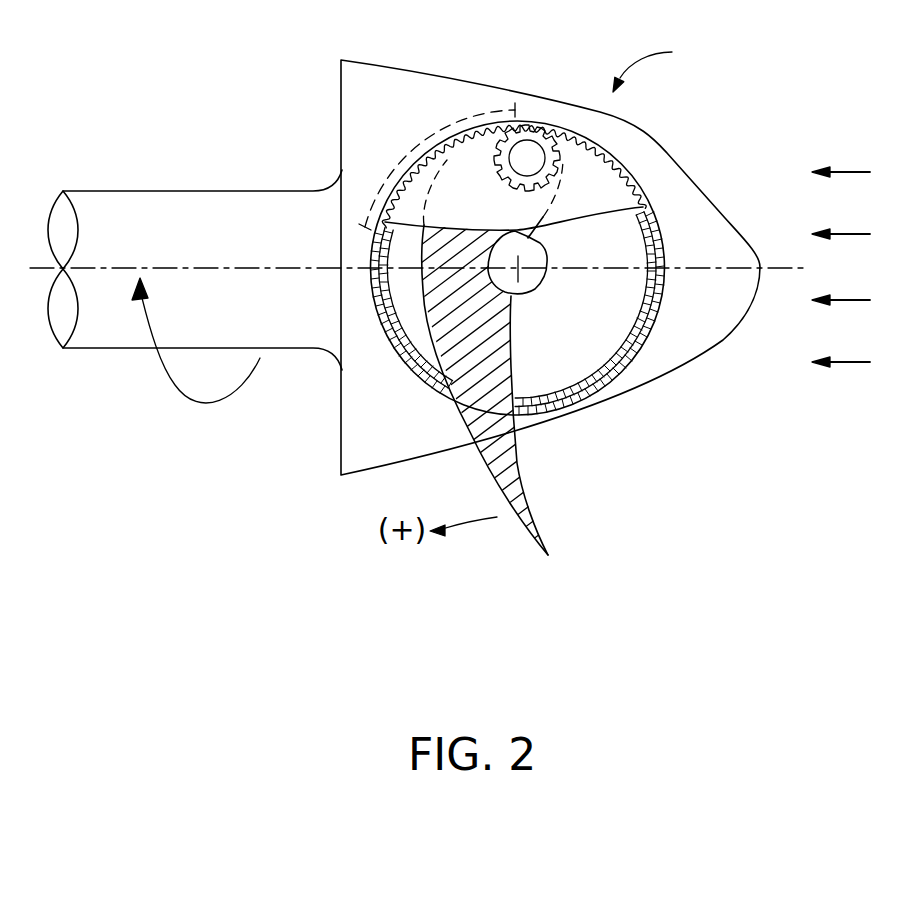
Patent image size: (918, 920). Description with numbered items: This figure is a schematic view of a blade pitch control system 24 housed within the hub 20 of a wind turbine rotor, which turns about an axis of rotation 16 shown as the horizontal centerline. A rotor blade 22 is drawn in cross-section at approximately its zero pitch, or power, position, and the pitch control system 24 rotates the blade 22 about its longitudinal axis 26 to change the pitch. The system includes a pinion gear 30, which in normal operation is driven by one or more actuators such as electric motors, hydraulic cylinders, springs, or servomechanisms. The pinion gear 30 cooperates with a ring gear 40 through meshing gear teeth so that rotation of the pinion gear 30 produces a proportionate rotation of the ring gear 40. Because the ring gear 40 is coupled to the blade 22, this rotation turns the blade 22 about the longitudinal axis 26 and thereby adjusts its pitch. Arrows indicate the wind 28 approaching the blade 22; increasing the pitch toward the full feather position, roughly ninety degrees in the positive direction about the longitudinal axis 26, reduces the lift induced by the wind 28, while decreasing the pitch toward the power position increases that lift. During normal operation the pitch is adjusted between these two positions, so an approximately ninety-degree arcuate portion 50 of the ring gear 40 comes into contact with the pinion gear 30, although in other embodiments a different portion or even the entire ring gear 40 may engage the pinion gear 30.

The axis of rotation 16 is at (782, 268).
The hub 20 is at (362, 60).
The rotor blade 22 is at (524, 505).
The blade pitch control system 24 is at (657, 65).
The longitudinal axis 26 is at (520, 270).
The wind 28 is at (845, 143).
The pinion gear 30 is at (500, 143).
The ring gear 40 is at (636, 172).
The arcuate portion 50 is at (432, 135).